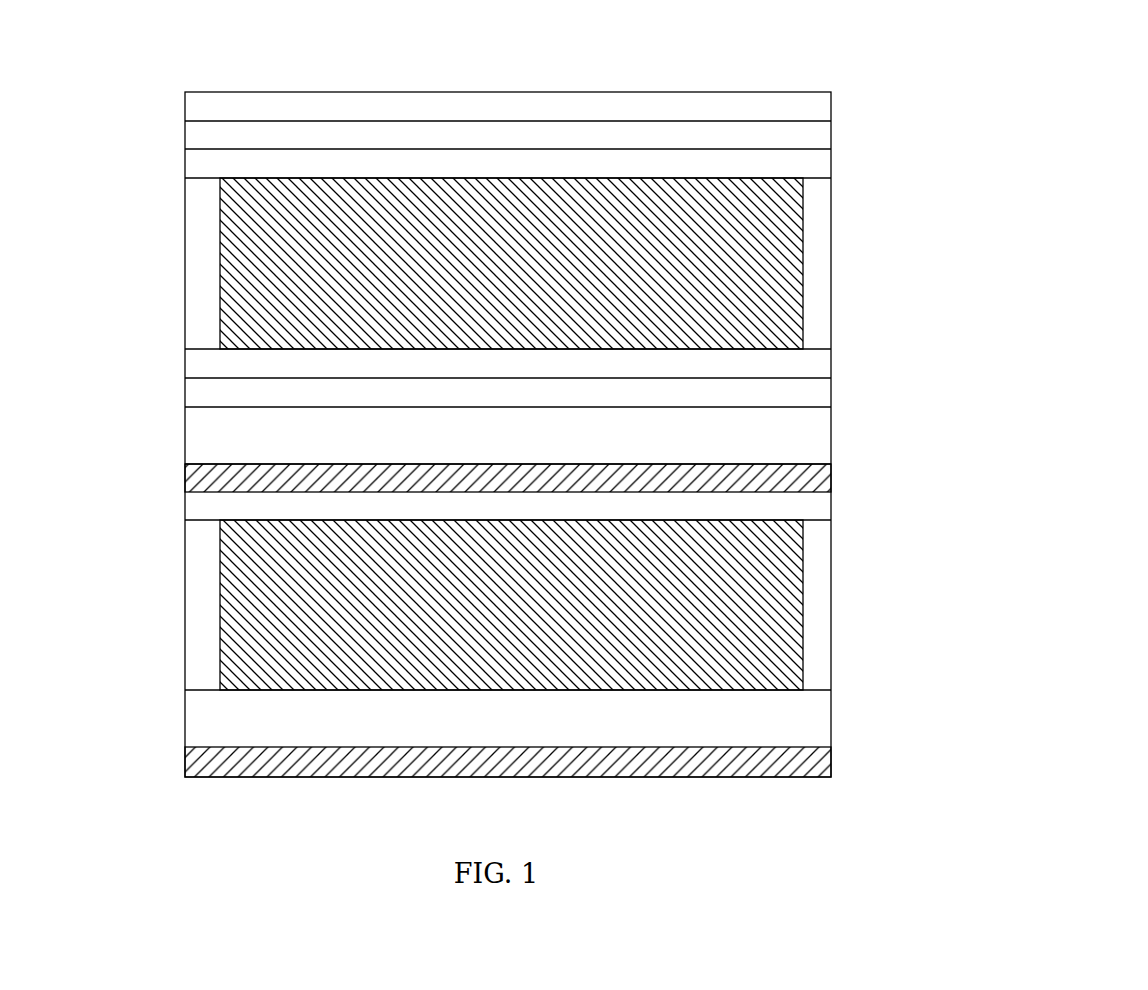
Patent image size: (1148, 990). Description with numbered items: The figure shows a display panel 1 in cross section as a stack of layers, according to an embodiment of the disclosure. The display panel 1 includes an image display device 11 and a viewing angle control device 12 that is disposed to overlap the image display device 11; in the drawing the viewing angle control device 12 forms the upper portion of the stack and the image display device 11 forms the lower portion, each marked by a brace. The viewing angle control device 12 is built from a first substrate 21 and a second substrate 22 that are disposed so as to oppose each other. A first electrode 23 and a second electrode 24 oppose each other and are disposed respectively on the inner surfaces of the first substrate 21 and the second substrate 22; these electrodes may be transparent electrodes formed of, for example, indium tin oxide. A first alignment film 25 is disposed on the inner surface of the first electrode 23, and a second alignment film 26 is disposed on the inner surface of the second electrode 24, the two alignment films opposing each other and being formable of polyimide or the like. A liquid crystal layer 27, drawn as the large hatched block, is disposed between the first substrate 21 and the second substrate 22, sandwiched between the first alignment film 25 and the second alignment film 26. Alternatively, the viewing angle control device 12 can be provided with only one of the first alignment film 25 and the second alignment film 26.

The display panel 1 is at (518, 54).
The image display device 11 is at (163, 473).
The viewing angle control device 12 is at (163, 106).
The first substrate 21 is at (832, 107).
The second substrate 22 is at (832, 437).
The first electrode 23 is at (832, 137).
The second electrode 24 is at (832, 407).
The first alignment film 25 is at (832, 165).
The second alignment film 26 is at (832, 375).
The liquid crystal layer 27 is at (803, 263).